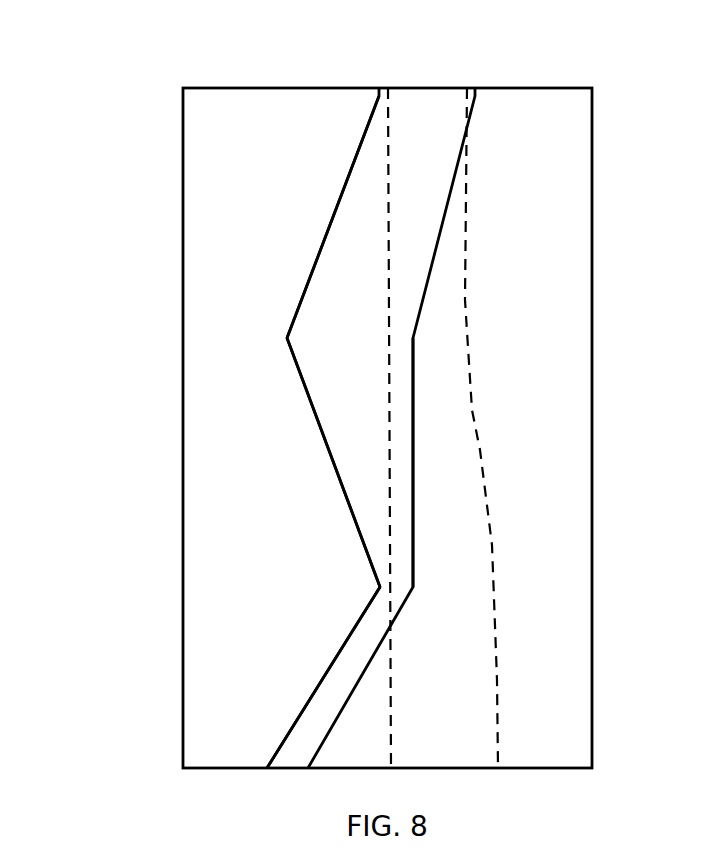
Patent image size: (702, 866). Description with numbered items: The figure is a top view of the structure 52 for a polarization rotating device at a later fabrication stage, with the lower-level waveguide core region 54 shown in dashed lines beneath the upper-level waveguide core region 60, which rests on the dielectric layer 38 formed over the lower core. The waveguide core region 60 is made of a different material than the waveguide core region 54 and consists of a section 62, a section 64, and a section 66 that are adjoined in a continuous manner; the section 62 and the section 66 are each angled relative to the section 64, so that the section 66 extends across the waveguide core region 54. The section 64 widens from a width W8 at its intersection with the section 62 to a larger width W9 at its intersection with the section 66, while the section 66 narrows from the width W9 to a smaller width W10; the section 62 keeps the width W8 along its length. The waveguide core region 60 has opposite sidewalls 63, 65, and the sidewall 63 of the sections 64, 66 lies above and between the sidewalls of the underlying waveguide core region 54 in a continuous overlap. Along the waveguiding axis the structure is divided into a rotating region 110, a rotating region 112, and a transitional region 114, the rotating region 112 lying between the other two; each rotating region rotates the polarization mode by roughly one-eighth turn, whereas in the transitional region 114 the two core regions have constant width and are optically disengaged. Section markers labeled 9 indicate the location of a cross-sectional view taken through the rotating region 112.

The structure 52 is at (157, 78).
The dielectric layer 38 is at (208, 746).
The waveguide core region 60 is at (342, 153).
The section 62 is at (362, 653).
The sidewall 63 is at (413, 432).
The section 64 is at (352, 427).
The sidewall 65 is at (317, 257).
The section 66 is at (373, 198).
The waveguide core region 54 is at (472, 222).
The rotating region 110 is at (148, 113).
The rotating region 112 is at (110, 331).
The transitional region 114 is at (138, 588).
The section line 9- 9 is at (241, 388).
The width W8 is at (463, 585).
The width W9 is at (412, 338).
The width W10 is at (379, 67).